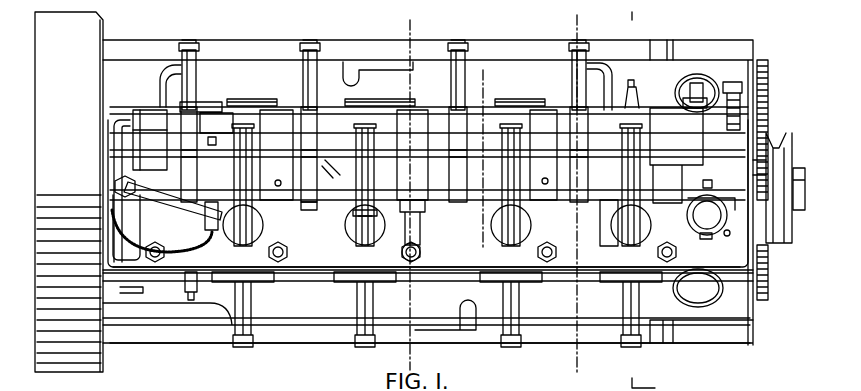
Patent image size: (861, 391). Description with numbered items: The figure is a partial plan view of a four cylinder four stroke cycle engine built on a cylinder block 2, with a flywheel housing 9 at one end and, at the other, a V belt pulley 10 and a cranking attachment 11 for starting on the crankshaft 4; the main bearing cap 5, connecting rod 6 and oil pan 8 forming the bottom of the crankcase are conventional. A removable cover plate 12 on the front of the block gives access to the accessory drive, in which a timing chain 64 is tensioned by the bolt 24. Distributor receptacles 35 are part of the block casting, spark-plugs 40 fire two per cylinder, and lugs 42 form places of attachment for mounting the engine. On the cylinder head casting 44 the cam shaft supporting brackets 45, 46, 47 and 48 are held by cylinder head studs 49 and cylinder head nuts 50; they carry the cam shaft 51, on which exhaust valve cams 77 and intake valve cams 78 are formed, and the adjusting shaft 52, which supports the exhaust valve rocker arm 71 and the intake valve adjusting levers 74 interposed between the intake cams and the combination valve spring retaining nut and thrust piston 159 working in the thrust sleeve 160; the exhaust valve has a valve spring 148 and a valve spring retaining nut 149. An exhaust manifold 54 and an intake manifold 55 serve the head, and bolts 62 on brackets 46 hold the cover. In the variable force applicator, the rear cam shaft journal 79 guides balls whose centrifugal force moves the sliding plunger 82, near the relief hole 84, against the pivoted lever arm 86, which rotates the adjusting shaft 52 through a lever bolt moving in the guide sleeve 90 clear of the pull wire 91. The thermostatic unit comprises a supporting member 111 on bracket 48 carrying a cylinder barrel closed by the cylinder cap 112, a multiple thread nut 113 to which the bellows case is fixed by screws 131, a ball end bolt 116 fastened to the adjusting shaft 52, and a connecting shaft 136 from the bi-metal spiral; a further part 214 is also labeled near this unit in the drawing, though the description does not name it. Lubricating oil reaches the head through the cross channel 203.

The cylinder block 2 is at (135, 70).
The flywheel housing 9 is at (82, 50).
The V belt pulley 10 is at (778, 145).
The cranking attachment 11 is at (800, 170).
The cover plate 12 is at (770, 100).
The bolt 24 is at (728, 82).
The distributor receptacles 35 is at (715, 74).
The spark-plugs 40 is at (640, 95).
The place of attachment 42 is at (665, 50).
The cylinder head casting 44 is at (303, 258).
The cam shaft supporting bracket 45 is at (143, 105).
The cam shaft supporting bracket 46 is at (280, 115).
The cam shaft supporting bracket 47 is at (425, 118).
The cam shaft supporting bracket 48 is at (660, 118).
The cylinder head stud 49 is at (403, 258).
The cylinder head nut 50 is at (420, 255).
The cam shaft 51 is at (435, 140).
The adjusting shaft 52 is at (612, 202).
The exhaust manifold 54 is at (567, 330).
The intake manifold 55 is at (537, 65).
The bolt 62 is at (283, 174).
The timing chain 64 is at (768, 118).
The exhaust valve rocker arm 71 is at (358, 238).
The intake valve adjusting lever 74 is at (310, 210).
The exhaust valve cam 77 is at (240, 145).
The intake valve cam 78 is at (178, 100).
The rear cam shaft journal 79 is at (140, 112).
The sliding plunger 82 is at (128, 135).
The relief hole 84 is at (203, 140).
The pivoted lever arm 86 is at (118, 168).
The guide sleeve 90 is at (215, 112).
The pull wire 91 is at (208, 235).
The supporting member 111 is at (690, 215).
The cylinder cap 112 is at (697, 226).
The multiple thread nut 113 is at (700, 238).
The ball end bolt 116 is at (708, 180).
The screws 131 is at (685, 255).
The connecting shaft 136 is at (729, 236).
The valve spring 148 is at (350, 212).
The valve spring retaining nut 149 is at (356, 230).
The combination valve spring retaining nut and thrust piston 159 is at (338, 166).
The thrust sleeve 160 is at (337, 173).
The cross channel 203 is at (128, 243).
The bolt 214 is at (690, 88).
The crankshaft 4 is at (652, 201).
The main bearing cap 5 is at (462, 240).
The connecting rod 6 is at (580, 362).
The oil pan 8 is at (413, 362).